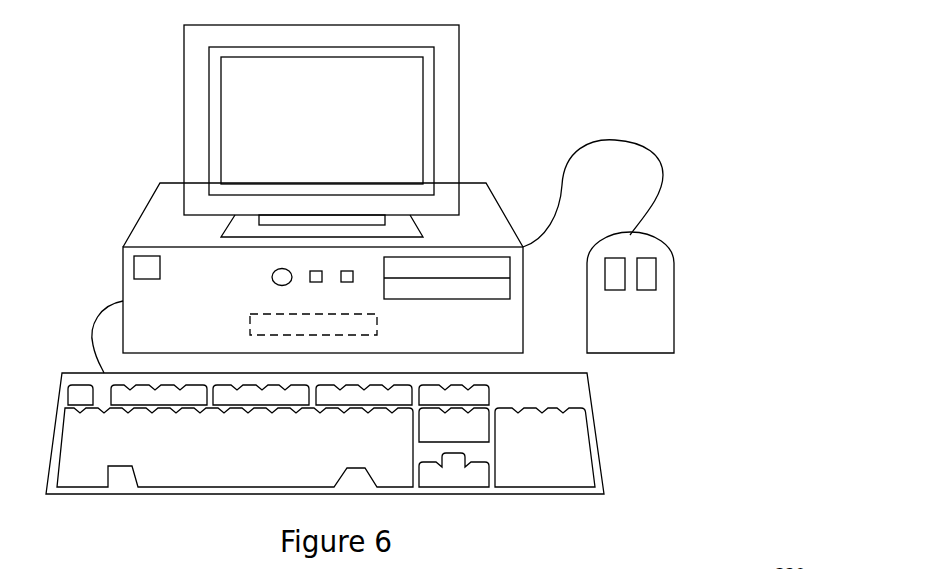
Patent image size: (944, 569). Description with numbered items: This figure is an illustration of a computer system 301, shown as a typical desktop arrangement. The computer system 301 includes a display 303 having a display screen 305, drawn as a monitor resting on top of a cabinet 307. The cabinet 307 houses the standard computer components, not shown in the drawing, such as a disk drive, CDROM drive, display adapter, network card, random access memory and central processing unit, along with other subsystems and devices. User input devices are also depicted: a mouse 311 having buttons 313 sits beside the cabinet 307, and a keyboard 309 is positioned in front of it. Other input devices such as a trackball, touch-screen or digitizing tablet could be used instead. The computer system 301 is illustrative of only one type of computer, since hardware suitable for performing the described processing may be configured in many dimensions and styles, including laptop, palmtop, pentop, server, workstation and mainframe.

The computer system 301 is at (618, 69).
The display 303 is at (388, 131).
The display screen 305 is at (398, 112).
The cabinet 307 is at (477, 220).
The keyboard 309 is at (187, 495).
The mouse 311 is at (701, 265).
The buttons 313 is at (615, 258).